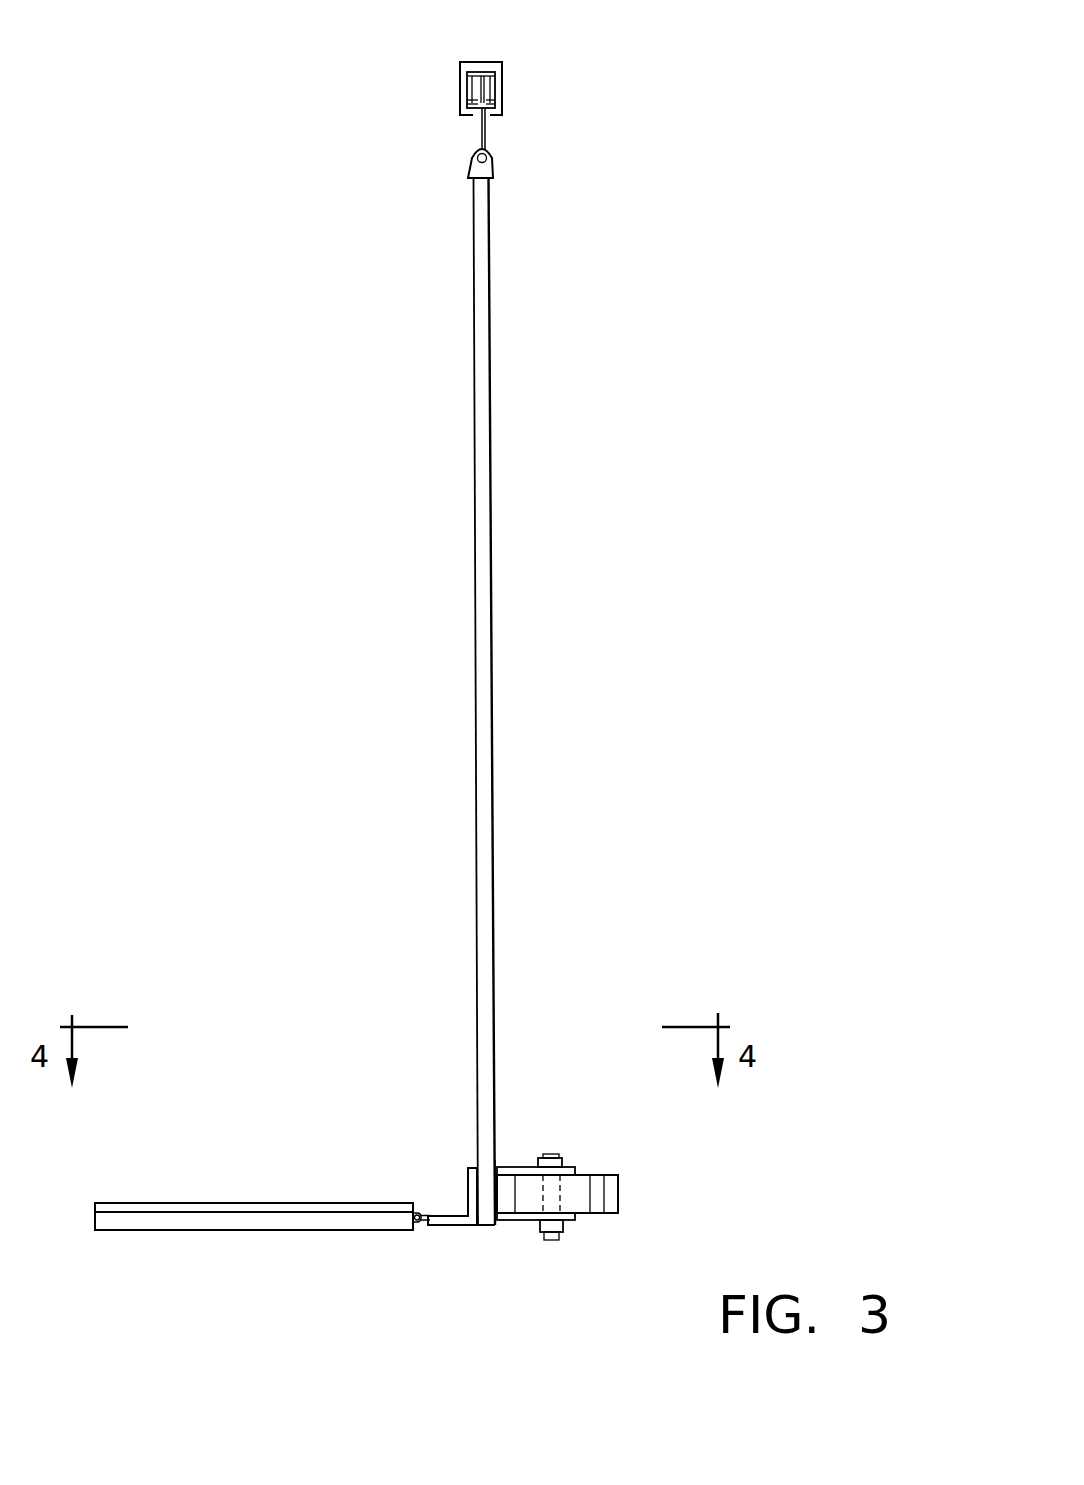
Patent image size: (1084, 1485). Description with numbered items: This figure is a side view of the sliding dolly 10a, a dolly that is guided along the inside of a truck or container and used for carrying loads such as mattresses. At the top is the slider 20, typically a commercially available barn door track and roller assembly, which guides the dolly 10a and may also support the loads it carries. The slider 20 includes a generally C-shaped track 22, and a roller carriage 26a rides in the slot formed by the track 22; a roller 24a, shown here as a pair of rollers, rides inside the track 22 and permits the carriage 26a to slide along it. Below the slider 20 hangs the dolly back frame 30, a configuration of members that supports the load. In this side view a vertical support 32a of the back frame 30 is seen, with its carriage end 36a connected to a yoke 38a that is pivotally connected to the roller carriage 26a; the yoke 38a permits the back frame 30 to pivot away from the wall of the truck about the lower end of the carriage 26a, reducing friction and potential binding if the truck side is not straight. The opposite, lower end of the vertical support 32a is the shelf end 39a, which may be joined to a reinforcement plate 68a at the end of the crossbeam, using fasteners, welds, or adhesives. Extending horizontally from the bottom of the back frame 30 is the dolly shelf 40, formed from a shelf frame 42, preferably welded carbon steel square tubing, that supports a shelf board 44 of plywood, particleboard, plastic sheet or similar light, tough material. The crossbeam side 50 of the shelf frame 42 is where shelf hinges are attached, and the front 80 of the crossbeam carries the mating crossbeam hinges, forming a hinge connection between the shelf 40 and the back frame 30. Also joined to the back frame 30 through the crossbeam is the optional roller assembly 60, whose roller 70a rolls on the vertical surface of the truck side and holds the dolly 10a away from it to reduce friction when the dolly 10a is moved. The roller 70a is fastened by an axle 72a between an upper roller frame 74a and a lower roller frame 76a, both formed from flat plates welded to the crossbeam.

The sliding dolly 10a is at (508, 681).
The slider 20 is at (486, 93).
The track 22 is at (480, 62).
The roller 24a is at (492, 88).
The roller carriage 26a is at (478, 133).
The dolly back frame 30 is at (488, 701).
The vertical support 32a is at (492, 602).
The carriage end 36a is at (490, 232).
The yoke 38a is at (495, 168).
The shelf end 39a is at (478, 1107).
The dolly shelf 40 is at (258, 1226).
The shelf frame 42 is at (305, 1231).
The shelf board 44 is at (208, 1203).
The crossbeam side 50 is at (425, 1228).
The roller assembly 60 is at (577, 1183).
The reinforcement plate 68a is at (463, 1226).
The roller 70a is at (618, 1202).
The axle 72a is at (550, 1160).
The upper roller frame 74a is at (513, 1167).
The lower roller frame 76a is at (515, 1222).
The front 80 is at (414, 1213).